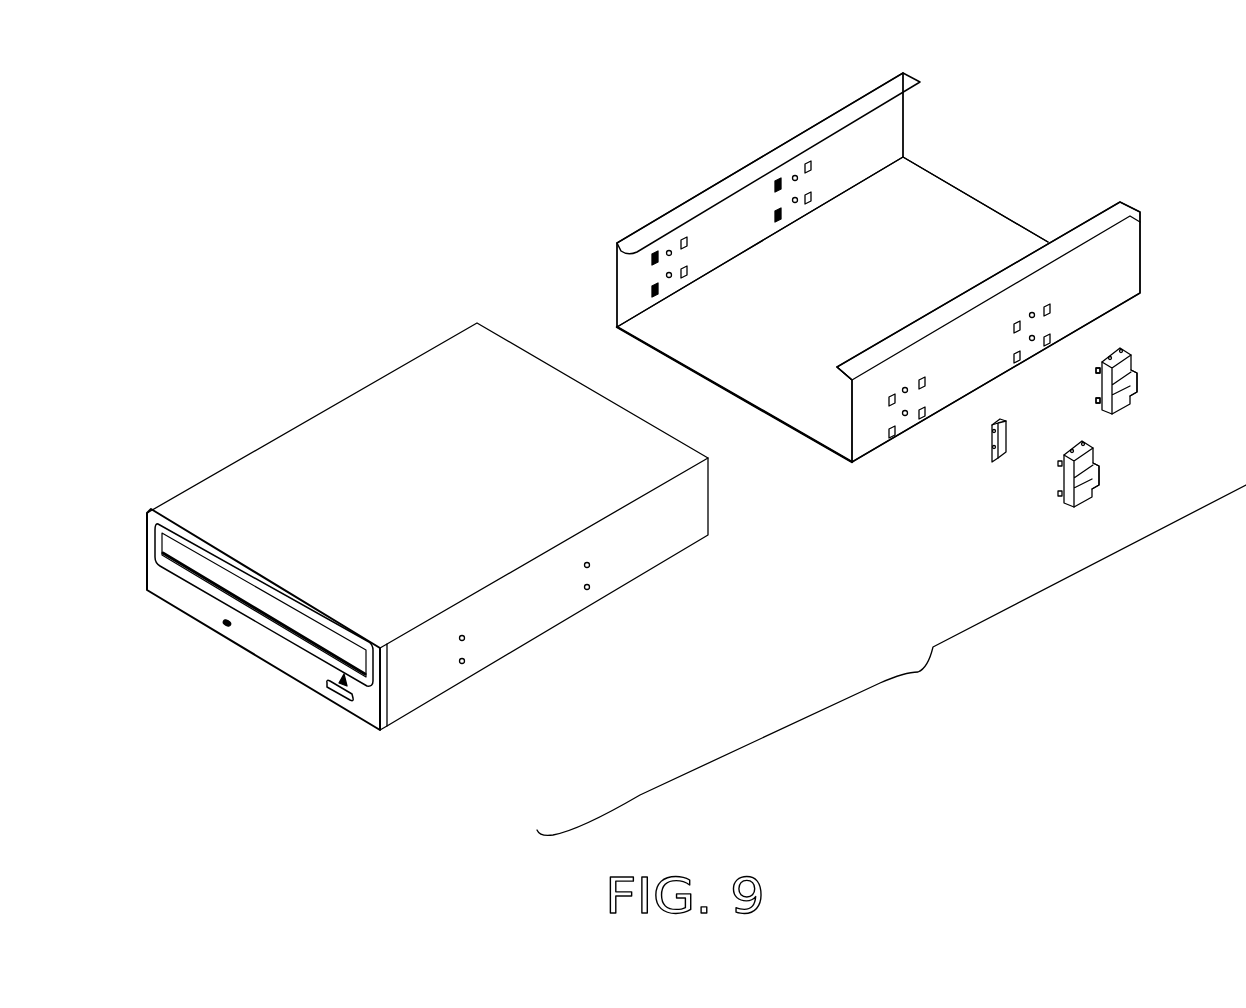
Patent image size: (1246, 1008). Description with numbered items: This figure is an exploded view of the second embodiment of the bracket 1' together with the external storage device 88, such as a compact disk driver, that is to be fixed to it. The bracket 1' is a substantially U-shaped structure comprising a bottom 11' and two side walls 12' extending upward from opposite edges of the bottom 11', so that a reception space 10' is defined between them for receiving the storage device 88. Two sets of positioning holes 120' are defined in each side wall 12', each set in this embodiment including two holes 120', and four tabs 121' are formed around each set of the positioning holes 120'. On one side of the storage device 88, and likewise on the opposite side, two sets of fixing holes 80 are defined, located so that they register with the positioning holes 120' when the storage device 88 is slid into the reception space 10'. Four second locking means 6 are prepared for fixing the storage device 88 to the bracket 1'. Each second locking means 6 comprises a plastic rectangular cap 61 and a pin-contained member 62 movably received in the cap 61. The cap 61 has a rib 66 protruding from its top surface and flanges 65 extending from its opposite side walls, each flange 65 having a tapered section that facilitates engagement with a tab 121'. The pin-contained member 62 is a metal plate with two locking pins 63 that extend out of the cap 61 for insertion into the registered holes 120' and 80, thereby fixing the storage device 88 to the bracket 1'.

The external storage device 88 is at (320, 410).
The fixing holes 80 is at (464, 641).
The bracket 1' is at (878, 255).
The reception space 10' is at (734, 429).
The bottom 11' is at (863, 308).
The side walls 12' is at (924, 257).
The positioning holes 120' is at (833, 339).
The tabs 121' is at (851, 329).
The second locking means 6 is at (1132, 362).
The cap 61 is at (1102, 467).
The pin-contained member 62 is at (994, 461).
The locking pins 63 is at (991, 429).
The flange 65 is at (1100, 377).
The rib 66 is at (1135, 388).